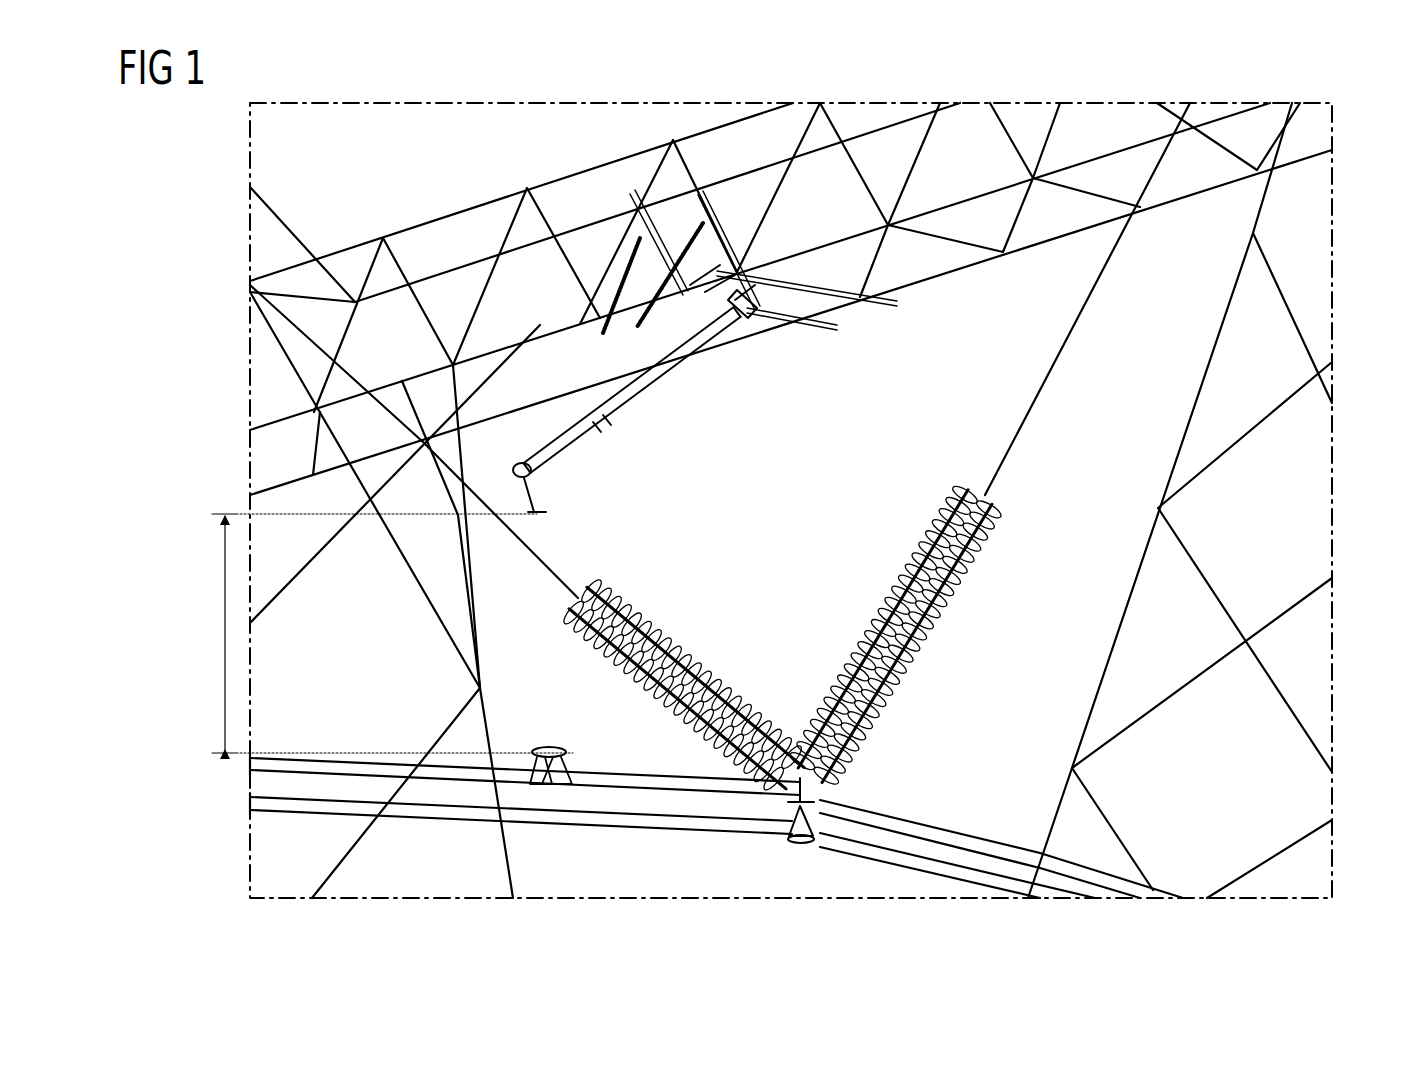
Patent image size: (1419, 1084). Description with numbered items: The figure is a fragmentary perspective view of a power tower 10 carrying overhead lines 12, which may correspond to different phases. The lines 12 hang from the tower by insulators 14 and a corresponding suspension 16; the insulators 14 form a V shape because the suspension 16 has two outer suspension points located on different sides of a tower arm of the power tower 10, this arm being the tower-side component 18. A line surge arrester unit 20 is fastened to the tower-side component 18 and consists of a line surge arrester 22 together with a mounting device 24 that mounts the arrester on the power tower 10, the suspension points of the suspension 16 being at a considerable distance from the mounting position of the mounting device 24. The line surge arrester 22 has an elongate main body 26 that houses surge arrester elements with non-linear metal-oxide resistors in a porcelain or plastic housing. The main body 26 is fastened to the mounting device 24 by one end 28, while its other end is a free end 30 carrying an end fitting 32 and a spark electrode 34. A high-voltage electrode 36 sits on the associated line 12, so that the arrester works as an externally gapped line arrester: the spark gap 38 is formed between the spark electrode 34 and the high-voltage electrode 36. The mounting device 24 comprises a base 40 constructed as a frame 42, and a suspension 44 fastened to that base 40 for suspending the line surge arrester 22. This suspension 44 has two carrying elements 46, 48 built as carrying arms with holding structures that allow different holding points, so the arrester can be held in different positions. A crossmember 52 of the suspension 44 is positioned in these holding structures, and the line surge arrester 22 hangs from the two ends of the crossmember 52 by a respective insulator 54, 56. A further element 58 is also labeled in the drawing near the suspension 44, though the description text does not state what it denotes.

The power tower 10 is at (1318, 208).
The lines 12 is at (935, 868).
The insulators 14 is at (748, 748).
The suspension 16 is at (1118, 263).
The tower-side component 18 is at (417, 217).
The line surge arrester unit 20 is at (800, 165).
The line surge arrester 22 is at (662, 412).
The mounting device 24 is at (805, 338).
The main body 26 is at (585, 426).
The end 28 is at (742, 325).
The free end 30 is at (505, 450).
The end fitting 32 is at (535, 478).
The spark electrode 34 is at (545, 511).
The high-voltage electrode 36 is at (586, 790).
The spark gap 38 is at (222, 637).
The base 40 is at (900, 306).
The frame 42 is at (884, 309).
The suspension 44 is at (636, 190).
The carrying element 46 is at (700, 190).
The carrying element 48 is at (700, 250).
The crossmember 52 is at (722, 268).
The insulator 54 is at (605, 300).
The insulator 56 is at (640, 270).
The nut 58 is at (742, 295).